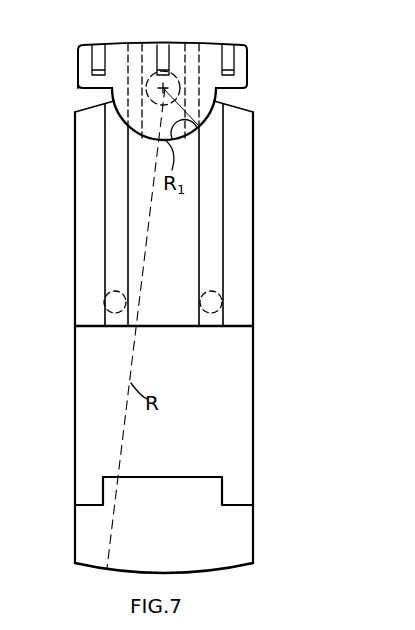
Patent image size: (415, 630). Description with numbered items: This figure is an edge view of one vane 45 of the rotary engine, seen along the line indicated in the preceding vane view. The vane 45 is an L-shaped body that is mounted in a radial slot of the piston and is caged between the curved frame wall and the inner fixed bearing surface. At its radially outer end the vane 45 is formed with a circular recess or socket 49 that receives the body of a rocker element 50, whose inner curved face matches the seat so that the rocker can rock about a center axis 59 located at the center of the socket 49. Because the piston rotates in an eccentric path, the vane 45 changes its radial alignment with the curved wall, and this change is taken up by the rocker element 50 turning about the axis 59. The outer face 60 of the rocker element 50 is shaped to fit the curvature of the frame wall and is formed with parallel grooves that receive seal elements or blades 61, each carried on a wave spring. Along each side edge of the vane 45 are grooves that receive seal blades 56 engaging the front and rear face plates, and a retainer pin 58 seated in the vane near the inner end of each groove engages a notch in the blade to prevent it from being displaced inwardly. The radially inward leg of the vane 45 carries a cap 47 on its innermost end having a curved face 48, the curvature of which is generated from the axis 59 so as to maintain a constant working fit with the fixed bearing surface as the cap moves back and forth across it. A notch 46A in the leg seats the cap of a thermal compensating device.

The vane 45 is at (180, 262).
The notch 46A is at (222, 497).
The cap 47 is at (170, 535).
The curved face 48 is at (93, 570).
The circular recess or socket 49 is at (199, 128).
The rocker element 50 is at (183, 43).
The seal element or blade 56 is at (117, 208).
The retainer pin 58 is at (143, 128).
The center axis 59 is at (165, 89).
The outer face 60 is at (148, 43).
The seal element or blade 61 is at (97, 50).